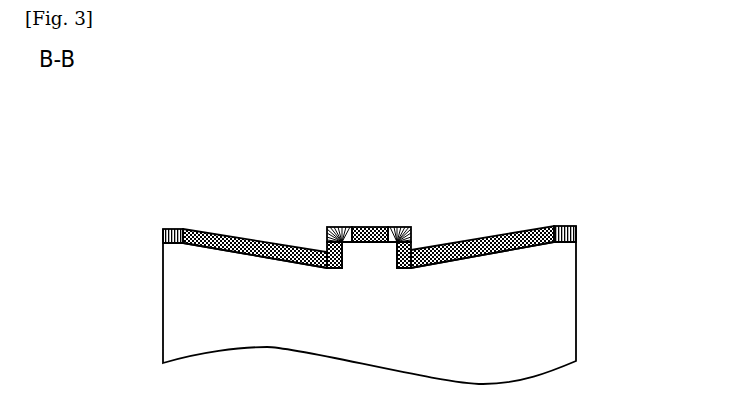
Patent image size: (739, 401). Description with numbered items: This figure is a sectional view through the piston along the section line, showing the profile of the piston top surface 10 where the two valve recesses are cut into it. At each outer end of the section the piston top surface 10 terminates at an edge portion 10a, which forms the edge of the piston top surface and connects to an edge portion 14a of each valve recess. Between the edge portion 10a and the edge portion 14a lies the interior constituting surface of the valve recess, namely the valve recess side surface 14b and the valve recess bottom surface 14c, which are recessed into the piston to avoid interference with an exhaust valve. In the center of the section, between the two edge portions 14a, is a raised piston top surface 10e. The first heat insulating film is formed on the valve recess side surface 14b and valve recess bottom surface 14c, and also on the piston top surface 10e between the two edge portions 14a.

The piston top surface 10 is at (148, 238).
The edge portion 10a is at (174, 228).
The piston top surface 10e is at (370, 225).
The edge portion 14a is at (342, 227).
The valve recess side surface 14b is at (293, 237).
The valve recess bottom surface 14c is at (236, 236).